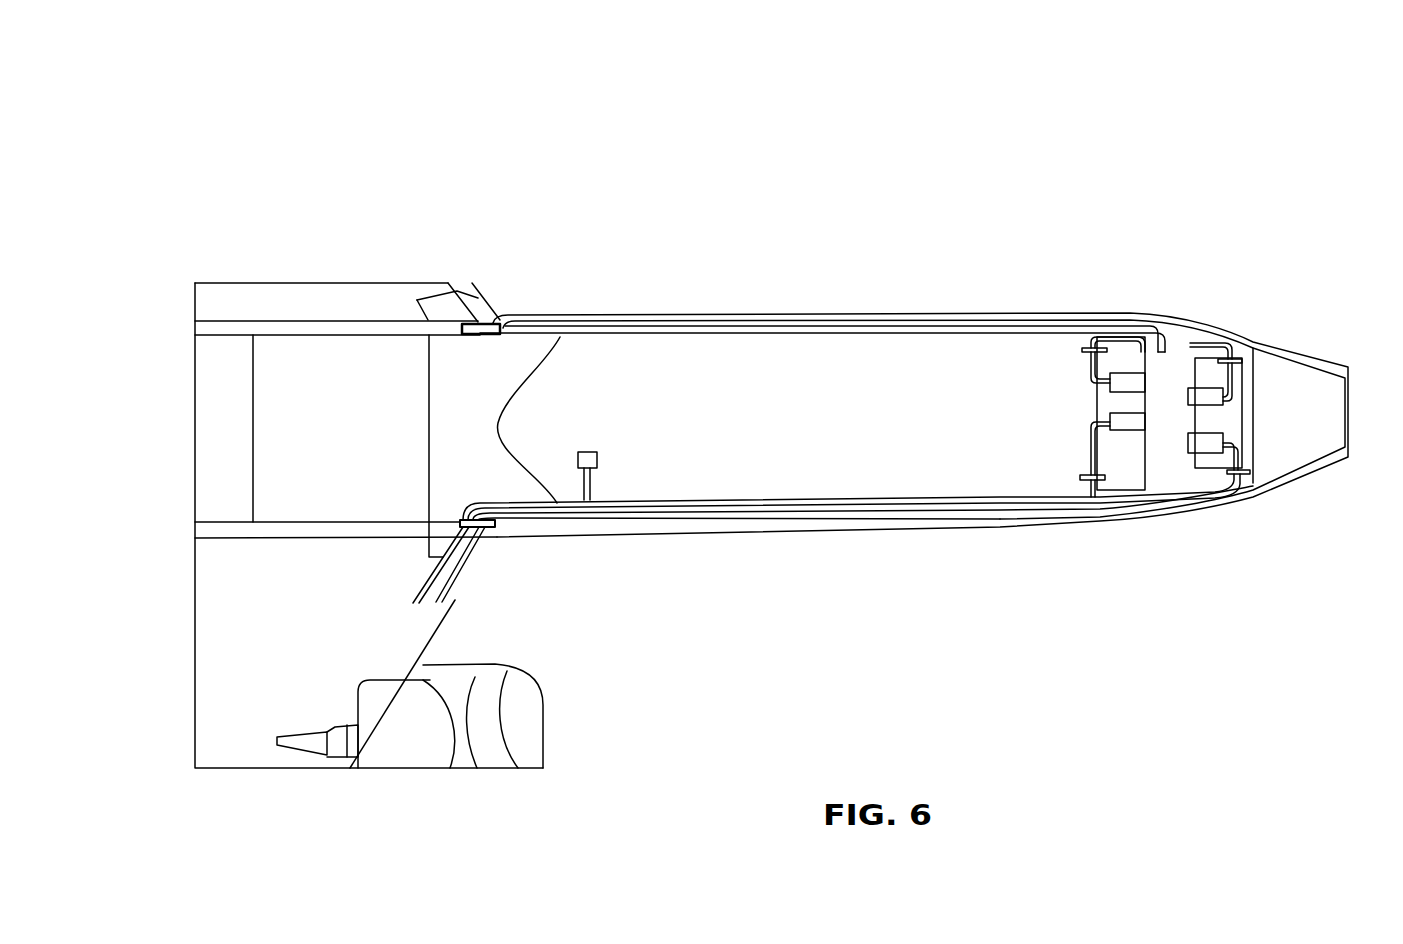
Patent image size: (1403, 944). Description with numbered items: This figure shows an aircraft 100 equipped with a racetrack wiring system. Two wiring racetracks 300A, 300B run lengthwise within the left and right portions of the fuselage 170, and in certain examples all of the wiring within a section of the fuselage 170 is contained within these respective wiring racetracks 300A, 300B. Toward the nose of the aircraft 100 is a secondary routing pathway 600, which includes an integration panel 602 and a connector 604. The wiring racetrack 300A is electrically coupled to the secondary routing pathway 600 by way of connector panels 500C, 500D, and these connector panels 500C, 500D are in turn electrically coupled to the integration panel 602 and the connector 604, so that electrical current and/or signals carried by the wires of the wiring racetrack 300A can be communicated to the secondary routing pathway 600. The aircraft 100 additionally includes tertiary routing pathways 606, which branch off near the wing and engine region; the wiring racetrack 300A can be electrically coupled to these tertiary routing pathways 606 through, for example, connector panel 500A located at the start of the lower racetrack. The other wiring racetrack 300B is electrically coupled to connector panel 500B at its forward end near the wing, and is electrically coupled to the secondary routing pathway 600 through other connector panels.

The aircraft 100 is at (470, 130).
The fuselage 170 is at (1020, 313).
The wiring racetrack 300A is at (851, 513).
The wiring racetrack 300B is at (782, 332).
The connector panel 500A is at (498, 528).
The connector panel 500B is at (497, 318).
The connector panel 500C is at (1093, 497).
The connector panel 500D is at (1257, 482).
The secondary routing pathway 600 is at (1172, 402).
The integration panel 602 is at (1167, 350).
The connector 604 is at (1115, 427).
The tertiary routing pathways 606 is at (597, 470).